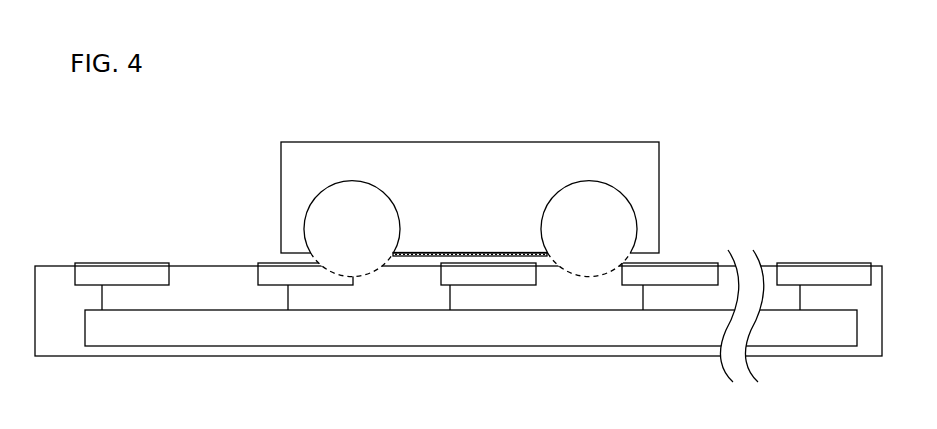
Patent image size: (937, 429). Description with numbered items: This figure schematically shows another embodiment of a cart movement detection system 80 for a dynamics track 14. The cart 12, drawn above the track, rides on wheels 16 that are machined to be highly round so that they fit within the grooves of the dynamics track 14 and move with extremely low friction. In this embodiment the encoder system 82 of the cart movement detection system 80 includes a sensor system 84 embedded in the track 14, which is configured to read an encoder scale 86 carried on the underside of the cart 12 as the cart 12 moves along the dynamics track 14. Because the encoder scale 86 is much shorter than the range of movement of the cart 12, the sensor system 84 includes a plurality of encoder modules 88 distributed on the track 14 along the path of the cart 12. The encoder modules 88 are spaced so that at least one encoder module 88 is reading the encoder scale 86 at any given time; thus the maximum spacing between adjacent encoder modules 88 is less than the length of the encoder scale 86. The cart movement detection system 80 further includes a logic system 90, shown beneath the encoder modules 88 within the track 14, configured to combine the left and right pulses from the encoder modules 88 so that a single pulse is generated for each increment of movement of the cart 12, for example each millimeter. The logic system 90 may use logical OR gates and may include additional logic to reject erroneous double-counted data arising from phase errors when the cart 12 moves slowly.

The cart movement detection system 80 is at (610, 63).
The encoder system 82 is at (480, 180).
The cart 12 is at (361, 142).
The wheels 16 is at (341, 238).
The encoder scale 86 is at (413, 253).
The sensor system 84 is at (73, 296).
The dynamics track 14 is at (63, 266).
The encoder modules 88 is at (111, 284).
The logic system 90 is at (459, 338).